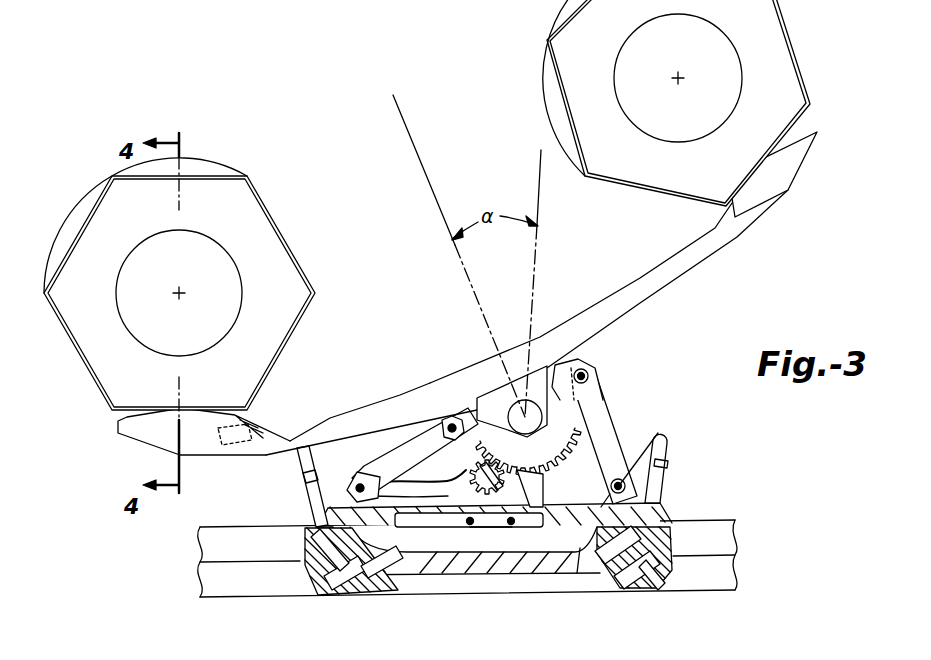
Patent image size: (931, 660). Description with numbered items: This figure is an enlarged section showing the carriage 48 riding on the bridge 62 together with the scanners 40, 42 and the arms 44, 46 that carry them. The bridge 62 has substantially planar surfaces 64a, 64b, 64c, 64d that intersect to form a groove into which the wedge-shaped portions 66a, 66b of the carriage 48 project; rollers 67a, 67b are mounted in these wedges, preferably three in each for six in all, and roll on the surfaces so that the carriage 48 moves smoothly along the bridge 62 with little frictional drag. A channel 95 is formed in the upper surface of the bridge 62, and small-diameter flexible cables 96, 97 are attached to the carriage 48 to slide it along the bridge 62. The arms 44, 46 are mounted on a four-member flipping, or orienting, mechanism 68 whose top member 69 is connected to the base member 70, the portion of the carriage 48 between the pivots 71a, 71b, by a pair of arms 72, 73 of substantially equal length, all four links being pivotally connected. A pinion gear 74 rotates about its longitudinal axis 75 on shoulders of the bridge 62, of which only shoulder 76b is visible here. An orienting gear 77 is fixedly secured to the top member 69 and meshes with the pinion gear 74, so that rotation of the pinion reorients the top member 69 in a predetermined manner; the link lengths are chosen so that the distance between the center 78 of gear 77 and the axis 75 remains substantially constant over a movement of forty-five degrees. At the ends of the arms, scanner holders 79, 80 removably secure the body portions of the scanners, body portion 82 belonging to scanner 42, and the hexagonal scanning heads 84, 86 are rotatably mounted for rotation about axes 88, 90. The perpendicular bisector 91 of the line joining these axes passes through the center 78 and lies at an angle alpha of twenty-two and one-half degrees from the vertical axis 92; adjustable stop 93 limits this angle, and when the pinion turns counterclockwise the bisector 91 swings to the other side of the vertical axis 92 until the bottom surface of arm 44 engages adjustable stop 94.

The scanner 40 is at (640, 203).
The scanner 42 is at (292, 362).
The arm 44 is at (572, 318).
The arm 46 is at (422, 382).
The carriage 48 is at (660, 507).
The bridge 62 is at (463, 574).
The planar surface 64a is at (575, 560).
The planar surface 64b is at (585, 575).
The planar surface 64c is at (407, 568).
The planar surface 64d is at (340, 588).
The wedge-shaped portion 66a is at (313, 548).
The wedge-shaped portion 66b is at (660, 540).
The roller 67a is at (340, 575).
The roller 67b is at (618, 584).
The flipping mechanism 68 is at (640, 383).
The top member 69 is at (570, 367).
The base member 70 is at (566, 492).
The pivot 71a is at (360, 479).
The pivot 71b is at (657, 448).
The arm 72 is at (398, 450).
The arm 73 is at (607, 411).
The pinion gear 74 is at (452, 487).
The longitudinal axis 75 is at (498, 478).
The shoulder 76b is at (328, 500).
The orienting gear 77 is at (541, 458).
The center of gear 78 is at (505, 402).
The scanner holder 79 is at (786, 163).
The scanner holder 80 is at (157, 437).
The body portion 82 is at (183, 153).
The hexagonal scanning head 84 is at (584, 170).
The hexagonal scanning head 86 is at (285, 230).
The axis of rotation 88 is at (677, 78).
The axis of rotation 90 is at (181, 293).
The perpendicular bisector 91 is at (453, 126).
The vertical axis 92 is at (574, 247).
The adjustable stop 93 is at (303, 477).
The adjustable stop 94 is at (663, 491).
The channel 95 is at (505, 548).
The flexible cable 96 is at (468, 522).
The flexible cable 97 is at (512, 522).